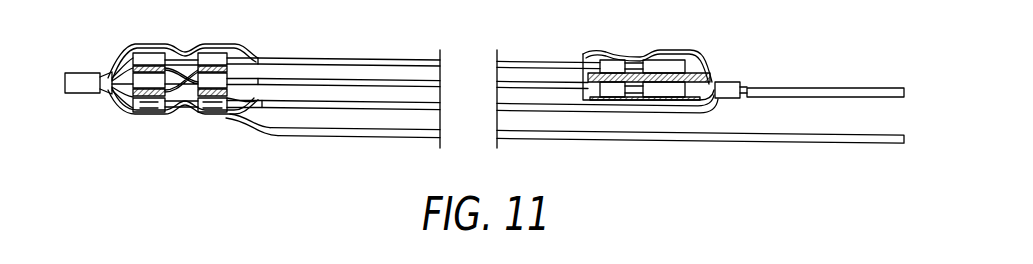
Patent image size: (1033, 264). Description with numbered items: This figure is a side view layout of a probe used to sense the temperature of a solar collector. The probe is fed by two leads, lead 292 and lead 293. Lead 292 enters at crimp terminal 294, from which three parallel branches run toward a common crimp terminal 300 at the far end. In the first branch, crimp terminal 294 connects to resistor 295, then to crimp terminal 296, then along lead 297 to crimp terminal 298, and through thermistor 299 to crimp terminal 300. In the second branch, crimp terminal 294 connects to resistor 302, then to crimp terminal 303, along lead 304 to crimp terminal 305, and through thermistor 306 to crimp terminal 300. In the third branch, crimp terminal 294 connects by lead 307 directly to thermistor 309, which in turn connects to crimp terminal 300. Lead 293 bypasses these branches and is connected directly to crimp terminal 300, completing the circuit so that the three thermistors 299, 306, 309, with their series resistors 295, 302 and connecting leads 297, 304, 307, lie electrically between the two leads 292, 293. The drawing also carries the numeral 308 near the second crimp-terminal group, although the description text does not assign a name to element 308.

The lead 292 is at (812, 87).
The lead 293 is at (492, 134).
The crimp terminal 294 is at (733, 82).
The resistor 295 is at (672, 60).
The crimp terminal 296 is at (605, 60).
The lead 297 is at (340, 58).
The crimp terminal 298 is at (220, 53).
The thermistor 299 is at (152, 56).
The crimp terminal 300 is at (85, 72).
The resistor 302 is at (668, 98).
The crimp terminal 303 is at (605, 98).
The lead 304 is at (492, 76).
The crimp terminal 305 is at (252, 108).
The thermistor 306 is at (107, 95).
The lead 307 is at (492, 104).
The terminal block 308 is at (220, 113).
The thermistor 309 is at (152, 113).